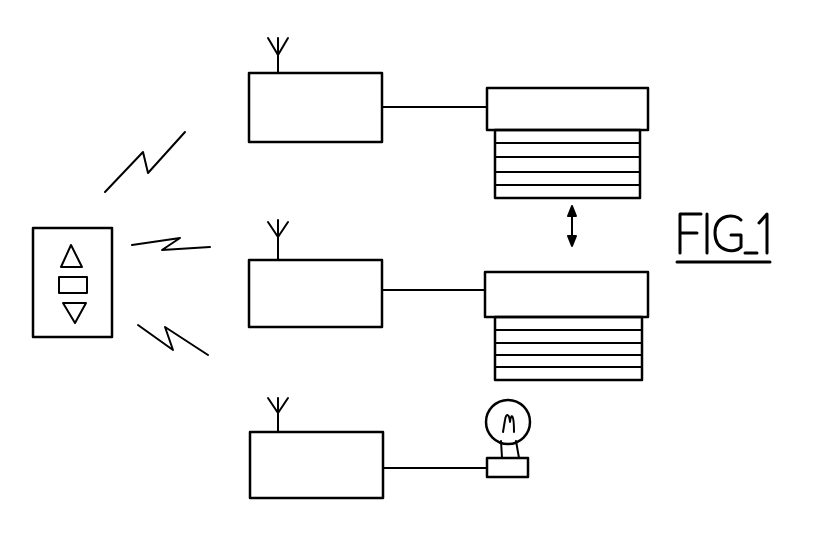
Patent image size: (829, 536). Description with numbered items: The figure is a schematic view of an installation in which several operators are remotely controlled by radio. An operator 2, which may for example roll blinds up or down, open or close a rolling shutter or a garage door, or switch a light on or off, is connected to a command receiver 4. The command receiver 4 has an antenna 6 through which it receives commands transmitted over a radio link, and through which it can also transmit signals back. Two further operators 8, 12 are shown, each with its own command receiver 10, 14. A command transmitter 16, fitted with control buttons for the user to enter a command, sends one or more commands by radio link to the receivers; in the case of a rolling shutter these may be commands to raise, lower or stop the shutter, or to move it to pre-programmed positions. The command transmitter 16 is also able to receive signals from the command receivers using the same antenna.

The operator 2 is at (588, 88).
The command receiver 4 is at (334, 73).
The antenna 6 is at (275, 45).
The operator 8 is at (617, 272).
The command receiver 10 is at (343, 260).
The operator 12 is at (528, 468).
The command receiver 14 is at (340, 432).
The command transmitter 16 is at (63, 228).